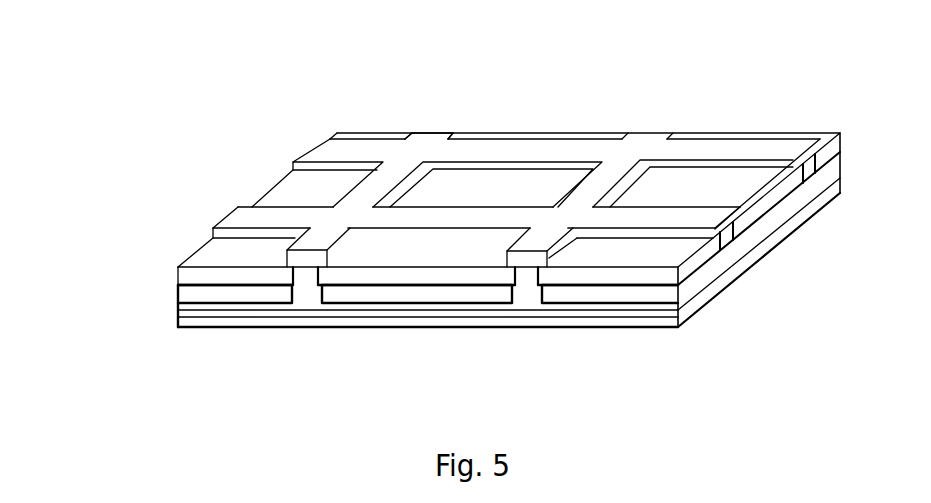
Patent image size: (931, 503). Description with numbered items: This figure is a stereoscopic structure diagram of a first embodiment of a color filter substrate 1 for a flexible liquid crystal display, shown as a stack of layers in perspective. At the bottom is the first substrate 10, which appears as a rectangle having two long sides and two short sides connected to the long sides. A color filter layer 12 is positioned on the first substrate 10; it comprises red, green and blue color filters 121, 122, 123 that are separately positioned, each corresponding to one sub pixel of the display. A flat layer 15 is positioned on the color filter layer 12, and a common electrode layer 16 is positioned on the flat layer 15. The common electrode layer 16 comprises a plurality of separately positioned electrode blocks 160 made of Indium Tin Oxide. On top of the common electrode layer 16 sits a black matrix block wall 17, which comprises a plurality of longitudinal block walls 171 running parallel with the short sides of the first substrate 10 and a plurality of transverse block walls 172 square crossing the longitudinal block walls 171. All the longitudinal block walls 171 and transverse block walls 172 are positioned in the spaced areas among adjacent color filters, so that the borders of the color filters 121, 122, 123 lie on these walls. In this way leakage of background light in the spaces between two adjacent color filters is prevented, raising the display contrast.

The color filter substrate 1 is at (60, 27).
The first substrate 10 is at (647, 317).
The flat layer 15 is at (525, 298).
The color filter layer 12 is at (178, 297).
The red color filter 121 is at (235, 293).
The green color filter 122 is at (368, 293).
The blue color filter 123 is at (577, 293).
The common electrode layer 16 is at (178, 279).
The electrode block 160 is at (440, 277).
The black matrix block wall 17 is at (445, 46).
The longitudinal block wall 171 is at (434, 138).
The transverse block wall 172 is at (373, 152).